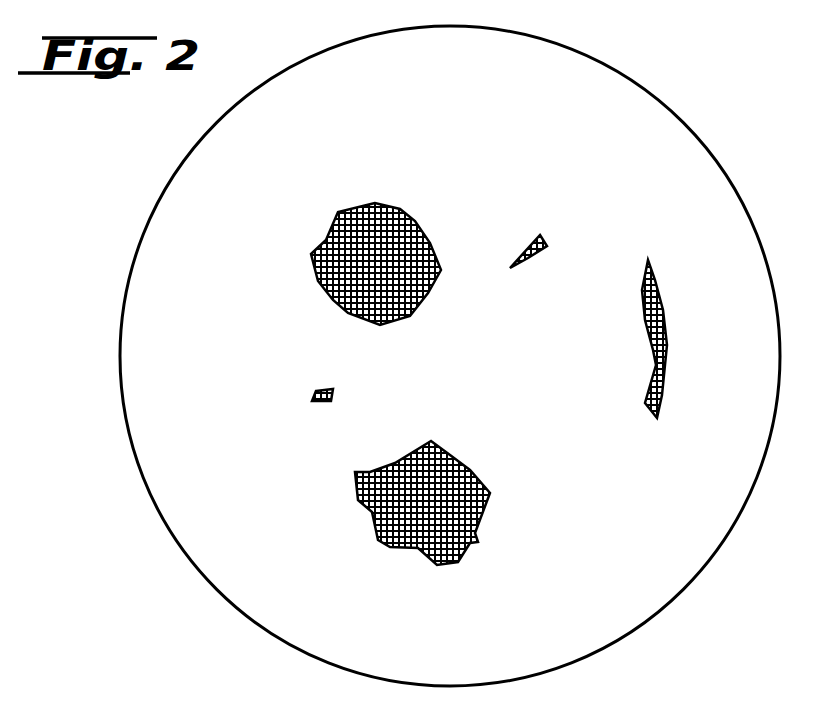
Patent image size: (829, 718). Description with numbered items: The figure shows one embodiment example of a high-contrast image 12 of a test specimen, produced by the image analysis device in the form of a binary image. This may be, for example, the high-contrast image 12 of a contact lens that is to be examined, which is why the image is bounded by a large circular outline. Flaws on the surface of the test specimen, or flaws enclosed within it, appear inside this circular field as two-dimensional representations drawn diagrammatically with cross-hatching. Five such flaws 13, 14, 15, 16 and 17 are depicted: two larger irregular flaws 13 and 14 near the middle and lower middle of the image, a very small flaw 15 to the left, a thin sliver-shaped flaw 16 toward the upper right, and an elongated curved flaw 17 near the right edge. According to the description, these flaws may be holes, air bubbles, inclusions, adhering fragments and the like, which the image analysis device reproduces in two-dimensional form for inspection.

The high-contrast image 12 is at (705, 141).
The flaw 13 is at (428, 238).
The flaw 14 is at (385, 547).
The flaw 15 is at (317, 393).
The flaw 16 is at (532, 257).
The flaw 17 is at (667, 337).